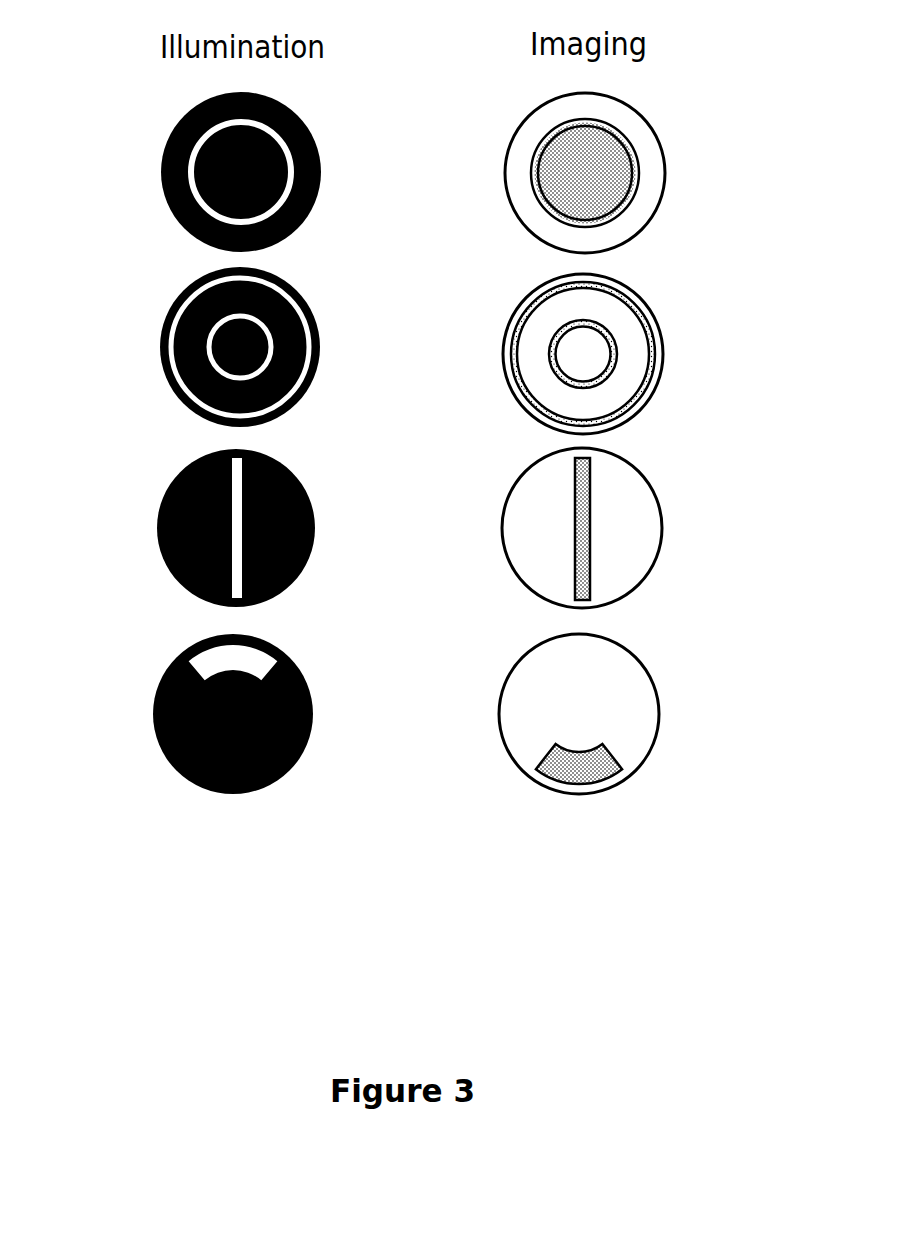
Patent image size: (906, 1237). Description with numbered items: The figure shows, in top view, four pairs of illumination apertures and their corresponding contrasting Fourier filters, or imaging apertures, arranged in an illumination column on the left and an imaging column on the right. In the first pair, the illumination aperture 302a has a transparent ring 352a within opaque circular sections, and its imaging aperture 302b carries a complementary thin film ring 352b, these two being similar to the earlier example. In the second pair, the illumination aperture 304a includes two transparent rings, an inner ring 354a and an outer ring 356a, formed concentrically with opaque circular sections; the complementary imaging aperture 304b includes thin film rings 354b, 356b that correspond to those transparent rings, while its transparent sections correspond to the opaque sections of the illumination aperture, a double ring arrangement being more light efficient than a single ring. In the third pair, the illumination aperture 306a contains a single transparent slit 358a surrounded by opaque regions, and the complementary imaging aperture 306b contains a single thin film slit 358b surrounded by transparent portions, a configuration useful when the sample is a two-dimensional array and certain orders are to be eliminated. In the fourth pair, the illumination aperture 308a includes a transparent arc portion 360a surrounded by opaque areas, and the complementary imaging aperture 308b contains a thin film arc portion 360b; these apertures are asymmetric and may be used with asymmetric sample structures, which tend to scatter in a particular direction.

The illumination aperture 302a is at (161, 183).
The annular illumination ring 352a is at (288, 162).
The imaging aperture 302b is at (665, 167).
The imaged annular ring 352b is at (620, 148).
The illumination aperture 304a is at (161, 367).
The inner illumination ring 354a is at (268, 345).
The outer illumination ring 356a is at (306, 389).
The imaging aperture 304b is at (663, 367).
The imaged inner ring 354b is at (605, 329).
The imaged outer ring 356b is at (630, 405).
The illumination aperture 306a is at (158, 523).
The illumination slit 358a is at (242, 502).
The imaging aperture 306b is at (663, 532).
The imaged slit 358b is at (590, 483).
The illumination aperture 308a is at (154, 721).
The illumination arc segment 360a is at (290, 658).
The imaging aperture 308b is at (660, 703).
The imaged arc segment 360b is at (600, 766).